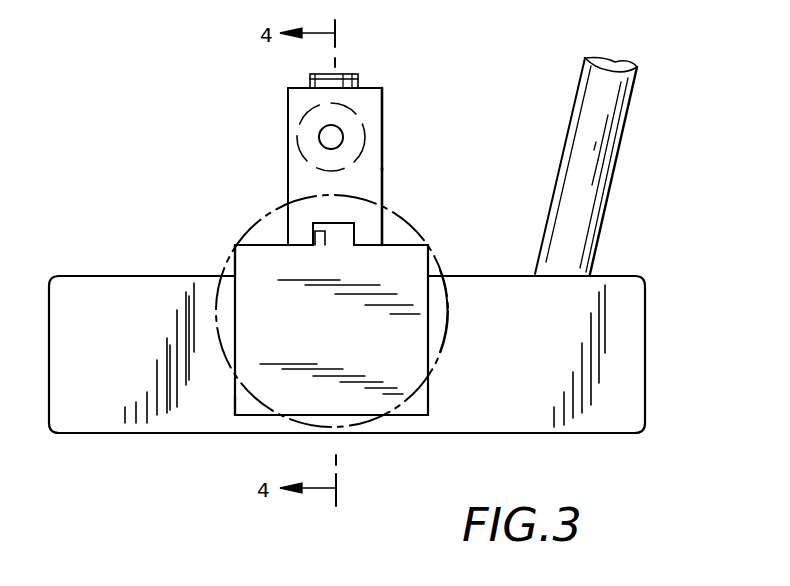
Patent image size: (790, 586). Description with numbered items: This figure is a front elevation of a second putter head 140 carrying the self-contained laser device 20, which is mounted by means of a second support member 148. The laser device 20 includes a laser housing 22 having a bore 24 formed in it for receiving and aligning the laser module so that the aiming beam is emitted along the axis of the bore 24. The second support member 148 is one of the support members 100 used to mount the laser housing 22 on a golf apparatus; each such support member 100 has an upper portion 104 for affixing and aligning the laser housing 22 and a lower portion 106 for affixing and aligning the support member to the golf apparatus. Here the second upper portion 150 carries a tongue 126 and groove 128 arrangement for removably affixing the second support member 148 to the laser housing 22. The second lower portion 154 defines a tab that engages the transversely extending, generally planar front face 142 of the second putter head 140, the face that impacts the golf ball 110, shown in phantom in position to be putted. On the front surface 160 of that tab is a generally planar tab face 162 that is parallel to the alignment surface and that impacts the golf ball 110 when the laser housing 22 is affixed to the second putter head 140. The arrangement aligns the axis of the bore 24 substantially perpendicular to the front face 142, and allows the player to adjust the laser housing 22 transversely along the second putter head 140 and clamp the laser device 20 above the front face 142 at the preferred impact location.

The self-contained laser device 20 is at (388, 54).
The laser housing 22 is at (288, 108).
The bore 24 is at (288, 149).
The upper portion 104 is at (382, 125).
The second upper portion 150 is at (382, 164).
The support member 100 is at (266, 262).
The tongue 126 is at (342, 233).
The second support member 148 is at (253, 267).
The groove 128 is at (326, 232).
The front surface 160 is at (245, 332).
The tab face 162 is at (251, 384).
The golf ball 110 is at (450, 303).
The lower portion 106 is at (408, 338).
The second lower portion 154 is at (413, 372).
The second putter head 140 is at (647, 318).
The front face 142 is at (628, 385).